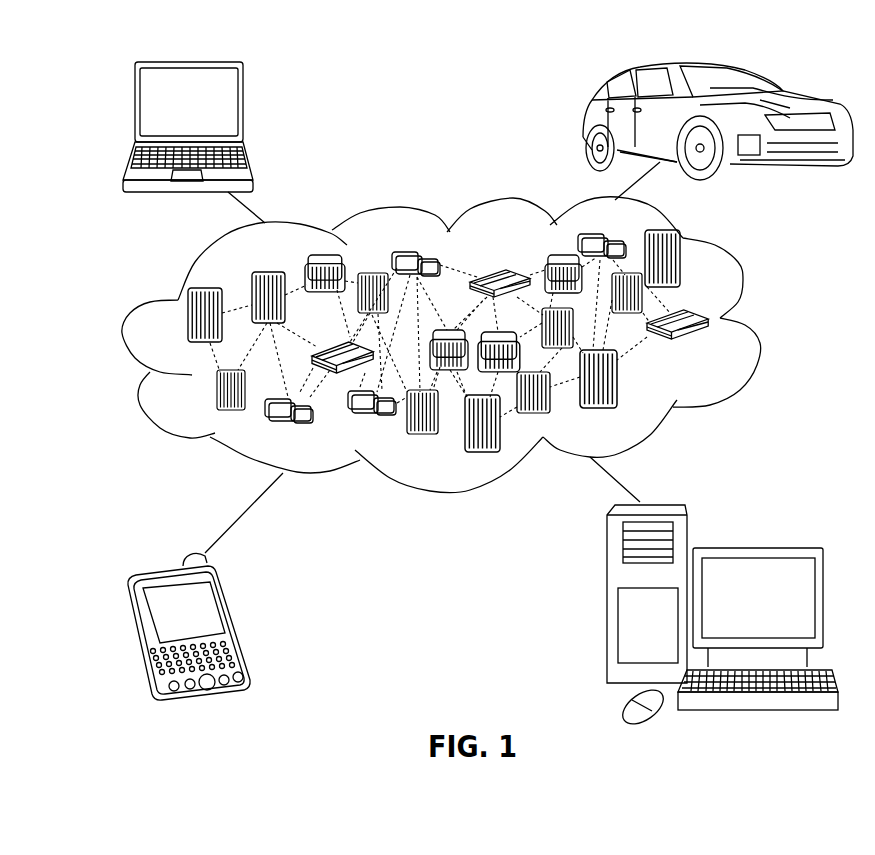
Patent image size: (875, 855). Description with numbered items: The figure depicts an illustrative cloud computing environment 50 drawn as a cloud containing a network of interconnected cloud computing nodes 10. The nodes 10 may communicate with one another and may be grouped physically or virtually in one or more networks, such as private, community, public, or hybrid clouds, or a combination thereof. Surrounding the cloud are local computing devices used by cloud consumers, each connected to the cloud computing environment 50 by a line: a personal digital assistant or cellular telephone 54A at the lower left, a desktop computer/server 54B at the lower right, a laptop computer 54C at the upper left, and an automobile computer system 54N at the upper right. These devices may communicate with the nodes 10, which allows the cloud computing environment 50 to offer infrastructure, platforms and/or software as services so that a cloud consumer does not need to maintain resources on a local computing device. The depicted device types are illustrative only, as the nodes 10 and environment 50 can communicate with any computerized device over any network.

The cloud computing nodes 10 is at (710, 344).
The cloud computing environment 50 is at (757, 325).
The personal digital assistant or cellular telephone 54A is at (233, 623).
The desktop computer/server 54B is at (756, 548).
The laptop computer 54C is at (243, 112).
The automobile computer system 54N is at (583, 125).